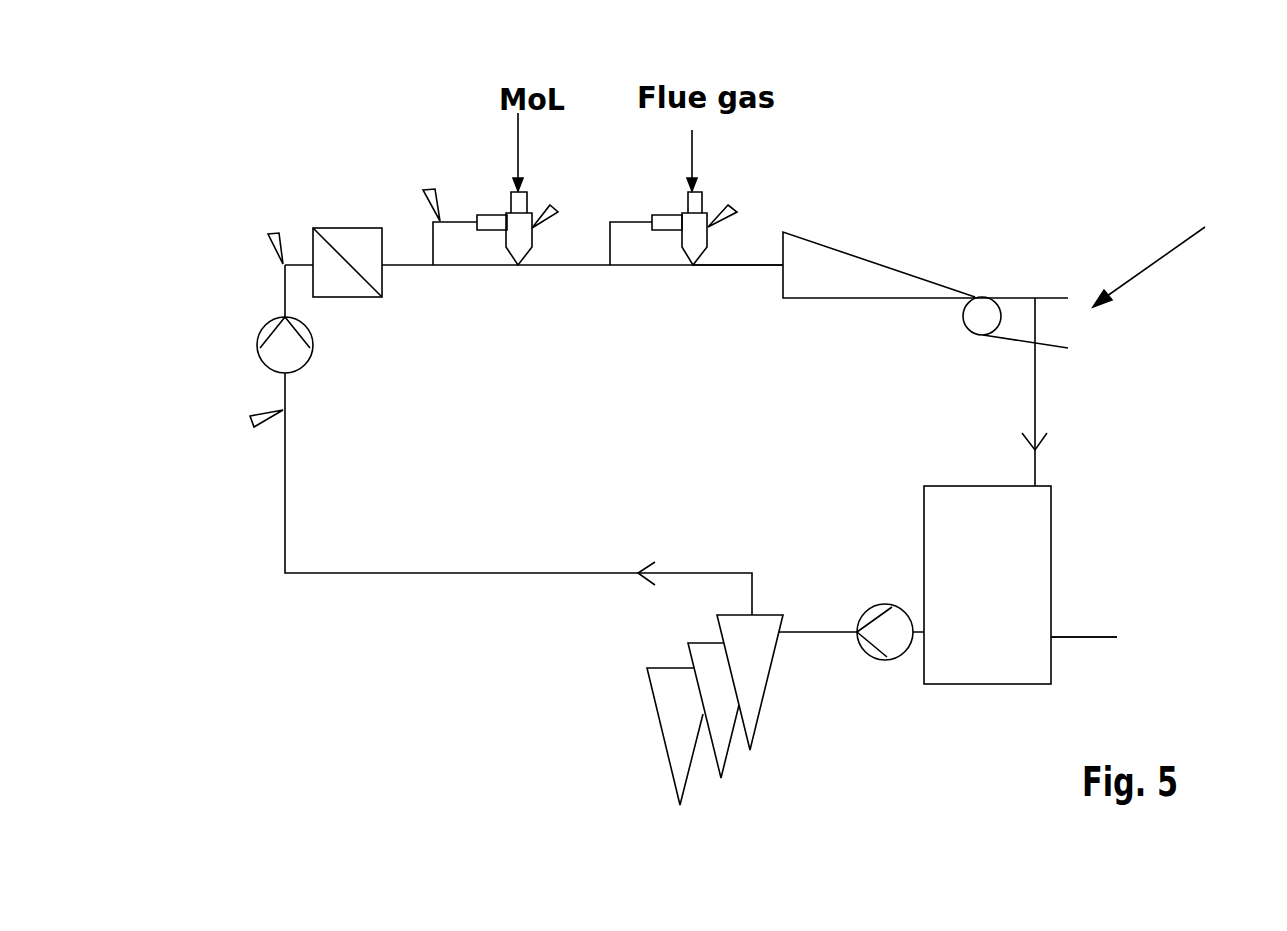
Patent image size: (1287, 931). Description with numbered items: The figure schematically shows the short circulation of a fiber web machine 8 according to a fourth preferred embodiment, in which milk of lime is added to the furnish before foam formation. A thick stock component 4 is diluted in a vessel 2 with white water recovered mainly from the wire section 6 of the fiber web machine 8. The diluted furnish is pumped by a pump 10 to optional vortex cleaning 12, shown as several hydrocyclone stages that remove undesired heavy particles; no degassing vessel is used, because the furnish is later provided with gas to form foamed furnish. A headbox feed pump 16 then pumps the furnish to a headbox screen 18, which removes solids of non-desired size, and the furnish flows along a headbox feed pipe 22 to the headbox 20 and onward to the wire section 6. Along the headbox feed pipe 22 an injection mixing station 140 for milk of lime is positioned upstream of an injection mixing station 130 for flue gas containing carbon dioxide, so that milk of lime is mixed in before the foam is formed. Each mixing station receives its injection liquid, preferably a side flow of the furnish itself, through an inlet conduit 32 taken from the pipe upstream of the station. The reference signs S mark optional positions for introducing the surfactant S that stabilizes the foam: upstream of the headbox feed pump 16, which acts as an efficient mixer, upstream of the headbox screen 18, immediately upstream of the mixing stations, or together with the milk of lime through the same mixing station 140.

The vessel 2 is at (972, 598).
The thick stock component 4 is at (1073, 638).
The wire section 6 is at (1003, 297).
The fiber web machine 8 is at (1156, 246).
The pump 10 is at (883, 636).
The vortex cleaning 12 is at (698, 688).
The headbox feed pump 16 is at (282, 355).
The headbox screen 18 is at (363, 262).
The headbox 20 is at (833, 273).
The headbox feed pipe 22 is at (727, 265).
The inlet conduit 32 is at (613, 237).
The injection mixing station for flue gas 130 is at (693, 235).
The injection mixing station for milk of lime 140 is at (518, 243).
The surfactant S is at (270, 234).